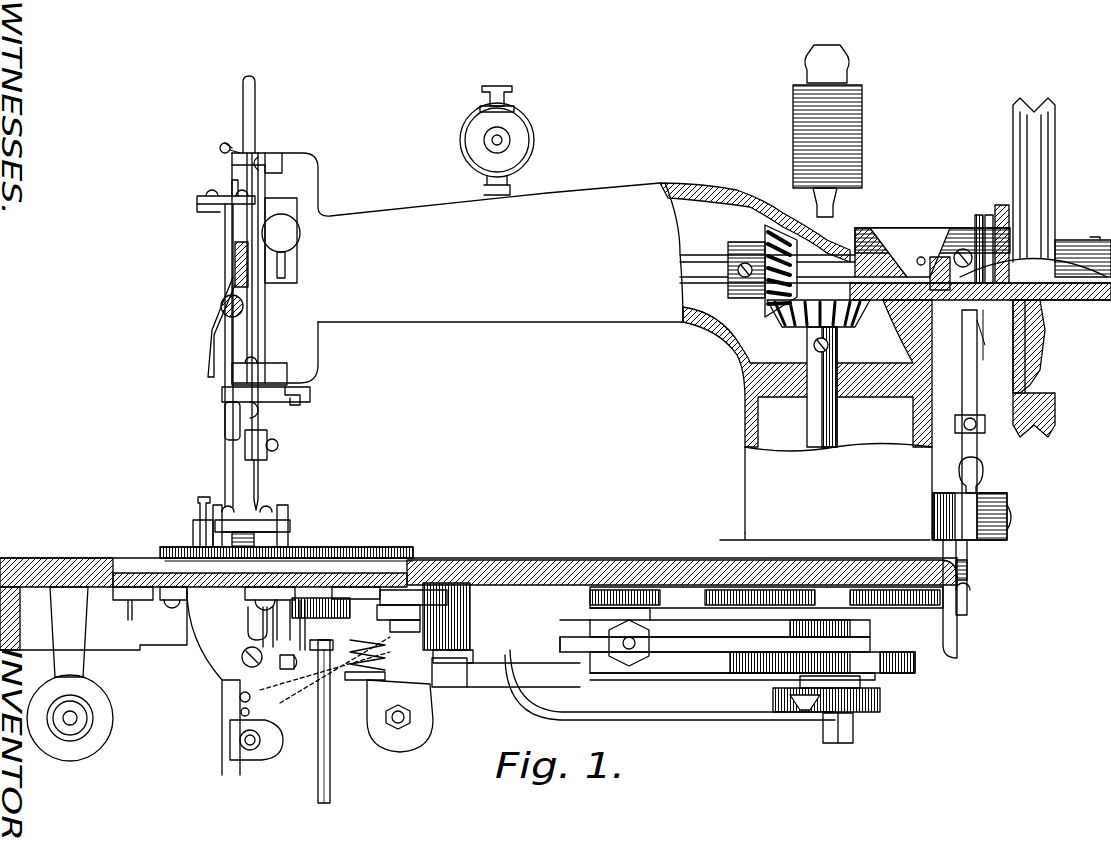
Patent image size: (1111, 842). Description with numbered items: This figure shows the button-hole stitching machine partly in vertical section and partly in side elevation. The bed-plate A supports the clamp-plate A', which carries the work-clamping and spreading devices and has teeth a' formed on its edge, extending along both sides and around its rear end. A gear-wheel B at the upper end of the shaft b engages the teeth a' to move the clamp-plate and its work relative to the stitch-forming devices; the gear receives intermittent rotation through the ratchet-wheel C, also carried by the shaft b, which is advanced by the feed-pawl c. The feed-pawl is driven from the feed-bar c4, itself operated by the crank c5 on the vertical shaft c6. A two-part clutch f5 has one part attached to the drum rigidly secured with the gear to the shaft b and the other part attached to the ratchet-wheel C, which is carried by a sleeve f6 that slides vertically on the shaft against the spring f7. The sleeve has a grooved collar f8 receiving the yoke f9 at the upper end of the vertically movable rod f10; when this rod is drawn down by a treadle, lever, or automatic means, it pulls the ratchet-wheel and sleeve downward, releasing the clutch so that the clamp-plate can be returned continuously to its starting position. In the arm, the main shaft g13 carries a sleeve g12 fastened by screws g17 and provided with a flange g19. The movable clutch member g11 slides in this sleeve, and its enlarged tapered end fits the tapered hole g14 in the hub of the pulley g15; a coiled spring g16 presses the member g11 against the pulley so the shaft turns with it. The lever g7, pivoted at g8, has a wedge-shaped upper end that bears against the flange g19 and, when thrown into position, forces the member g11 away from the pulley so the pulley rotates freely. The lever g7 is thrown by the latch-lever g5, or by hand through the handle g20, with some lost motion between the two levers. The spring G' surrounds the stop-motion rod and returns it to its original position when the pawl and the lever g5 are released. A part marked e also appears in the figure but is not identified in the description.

The bed-plate A is at (478, 594).
The clamp-plate A' is at (286, 538).
The teeth a' is at (279, 546).
The gear-wheel B is at (365, 547).
The shaft b is at (362, 547).
The spring G' is at (797, 595).
The bracket e is at (248, 617).
The feed-pawl c is at (369, 604).
The ratchet-wheel C is at (346, 694).
The feed-bar c4 is at (690, 720).
The crank c5 is at (865, 712).
The vertical shaft c6 is at (838, 422).
The clutch f5 is at (294, 663).
The sleeve f6 is at (395, 632).
The spring f7 is at (388, 676).
The grooved collar f8 is at (388, 655).
The yoke f9 is at (306, 650).
The vertically movable rod f10 is at (330, 762).
The lever g5 is at (962, 618).
The lever g7 is at (962, 370).
The pivot g8 is at (1012, 522).
The movable clutch member g11 is at (978, 340).
The sleeve g12 is at (963, 248).
The main shaft g13 is at (868, 228).
The tapered hole g14 is at (1030, 305).
The pulley g15 is at (1040, 177).
The coiled spring g16 is at (933, 318).
The screws g17 is at (921, 257).
The flange g19 is at (979, 215).
The handle g20 is at (983, 476).